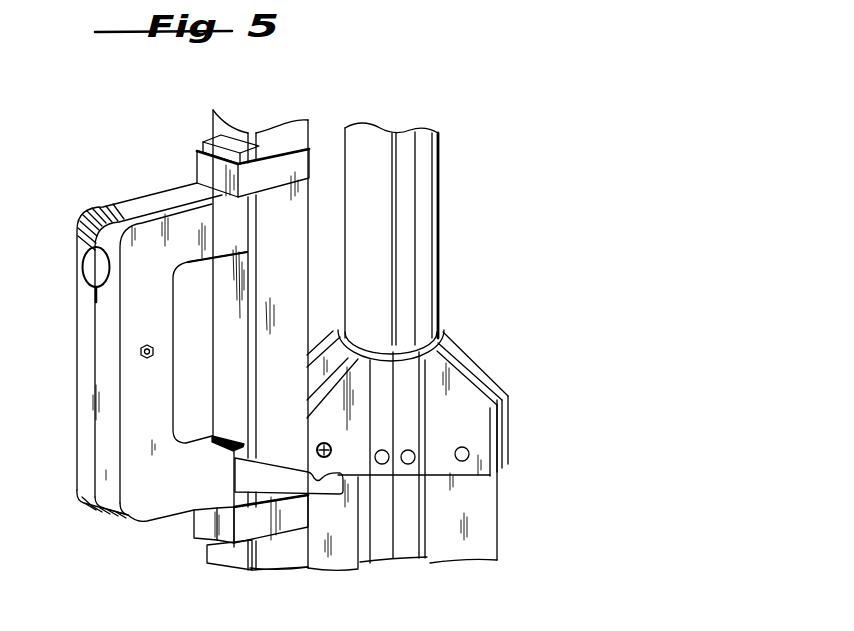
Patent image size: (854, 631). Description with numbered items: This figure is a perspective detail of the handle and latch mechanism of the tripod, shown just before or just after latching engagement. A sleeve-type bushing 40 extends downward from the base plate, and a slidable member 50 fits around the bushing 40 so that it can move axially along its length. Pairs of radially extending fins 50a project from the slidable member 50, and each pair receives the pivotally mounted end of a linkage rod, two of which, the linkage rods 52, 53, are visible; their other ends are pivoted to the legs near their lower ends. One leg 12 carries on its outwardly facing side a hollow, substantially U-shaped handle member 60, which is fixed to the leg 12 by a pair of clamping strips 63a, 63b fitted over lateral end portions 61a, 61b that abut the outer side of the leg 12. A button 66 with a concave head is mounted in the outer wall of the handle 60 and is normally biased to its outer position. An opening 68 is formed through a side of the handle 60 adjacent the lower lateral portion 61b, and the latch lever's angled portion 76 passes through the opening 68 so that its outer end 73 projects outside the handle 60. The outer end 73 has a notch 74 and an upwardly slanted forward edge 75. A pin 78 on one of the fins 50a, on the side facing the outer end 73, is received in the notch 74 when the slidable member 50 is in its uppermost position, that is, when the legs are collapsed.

The leg 12 is at (219, 131).
The sleeve-type bushing 40 is at (432, 198).
The slidable member 50 is at (407, 418).
The fins 50a is at (338, 345).
The linkage rod 52 is at (356, 563).
The linkage rod 53 is at (472, 557).
The handle member 60 is at (72, 357).
The lateral end portion 61a is at (203, 145).
The lateral end portion 61b is at (204, 549).
The clamping strip 63a is at (212, 170).
The clamping strip 63b is at (194, 540).
The button 66 is at (93, 267).
The opening 68 is at (193, 513).
The outer end 73 is at (302, 550).
The notch 74 is at (318, 474).
The forward edge 75 is at (355, 477).
The angled portion 76 is at (231, 473).
The pin 78 is at (330, 447).